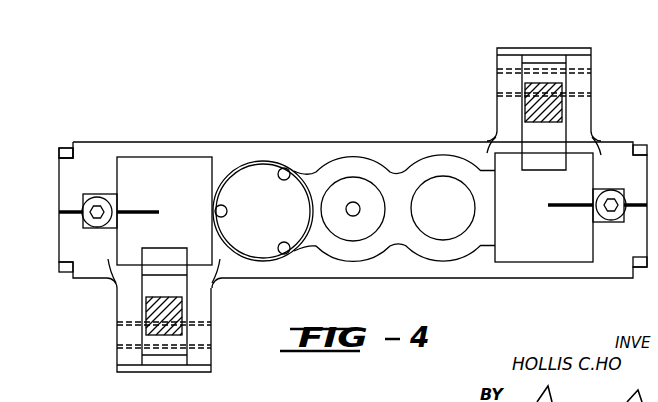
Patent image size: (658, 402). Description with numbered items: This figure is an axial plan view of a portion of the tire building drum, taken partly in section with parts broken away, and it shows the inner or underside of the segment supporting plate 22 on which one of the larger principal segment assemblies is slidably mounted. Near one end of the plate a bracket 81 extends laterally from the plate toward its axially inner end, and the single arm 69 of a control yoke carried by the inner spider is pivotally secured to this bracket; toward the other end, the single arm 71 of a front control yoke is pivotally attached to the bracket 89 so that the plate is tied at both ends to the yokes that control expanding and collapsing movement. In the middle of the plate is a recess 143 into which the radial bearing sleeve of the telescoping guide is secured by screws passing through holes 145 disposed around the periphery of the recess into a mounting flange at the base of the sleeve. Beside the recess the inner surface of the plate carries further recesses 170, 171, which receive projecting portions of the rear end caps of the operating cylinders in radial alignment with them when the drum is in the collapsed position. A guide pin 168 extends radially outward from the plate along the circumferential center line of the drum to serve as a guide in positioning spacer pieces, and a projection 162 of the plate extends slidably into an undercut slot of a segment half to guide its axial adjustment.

The segment supporting plate 22 is at (304, 158).
The projection of the supporting plate 162 is at (59, 147).
The recess 143 is at (253, 258).
The holes 145 is at (288, 253).
The guide pin 168 is at (352, 201).
The recess 170 is at (373, 236).
The recess 171 is at (452, 240).
The bracket 81 is at (584, 106).
The single arm 69 is at (538, 83).
The bracket 89 is at (119, 309).
The single arm 71 is at (166, 333).